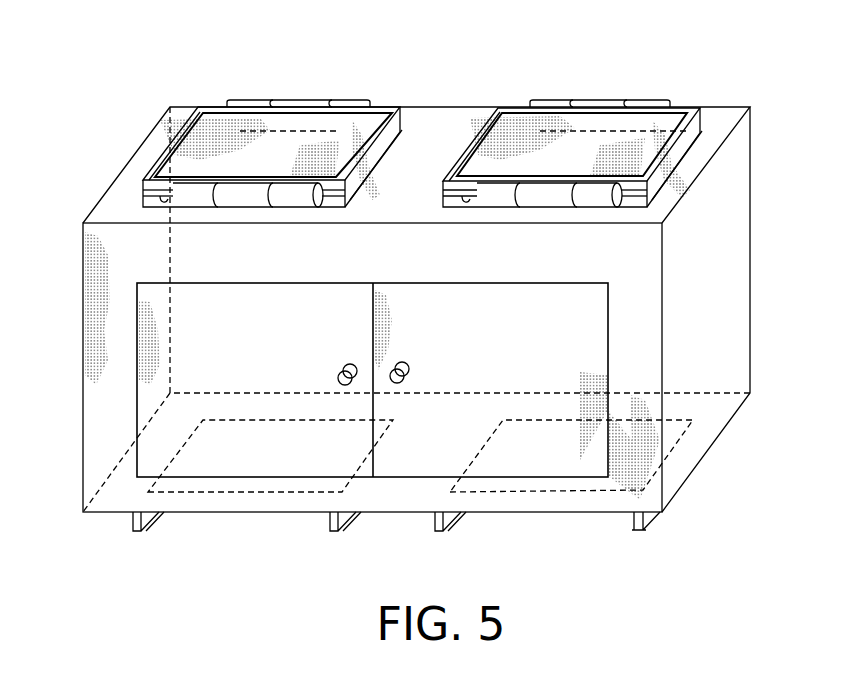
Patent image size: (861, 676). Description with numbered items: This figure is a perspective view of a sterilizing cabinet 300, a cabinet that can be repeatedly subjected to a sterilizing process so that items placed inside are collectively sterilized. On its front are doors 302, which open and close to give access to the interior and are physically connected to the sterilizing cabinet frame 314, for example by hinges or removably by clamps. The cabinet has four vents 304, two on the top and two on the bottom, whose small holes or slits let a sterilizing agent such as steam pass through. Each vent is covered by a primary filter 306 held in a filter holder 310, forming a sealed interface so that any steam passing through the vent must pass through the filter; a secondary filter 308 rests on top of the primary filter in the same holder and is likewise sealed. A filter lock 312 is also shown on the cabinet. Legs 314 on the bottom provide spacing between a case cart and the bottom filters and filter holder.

The sterilizing cabinet 300 is at (771, 237).
The doors 302 is at (190, 370).
The vents 304 is at (157, 153).
The primary filter 306 is at (135, 198).
The secondary filter 308 is at (236, 118).
The filter holder 310 is at (300, 110).
The filter lock 312 is at (490, 184).
The legs 314 is at (107, 318).